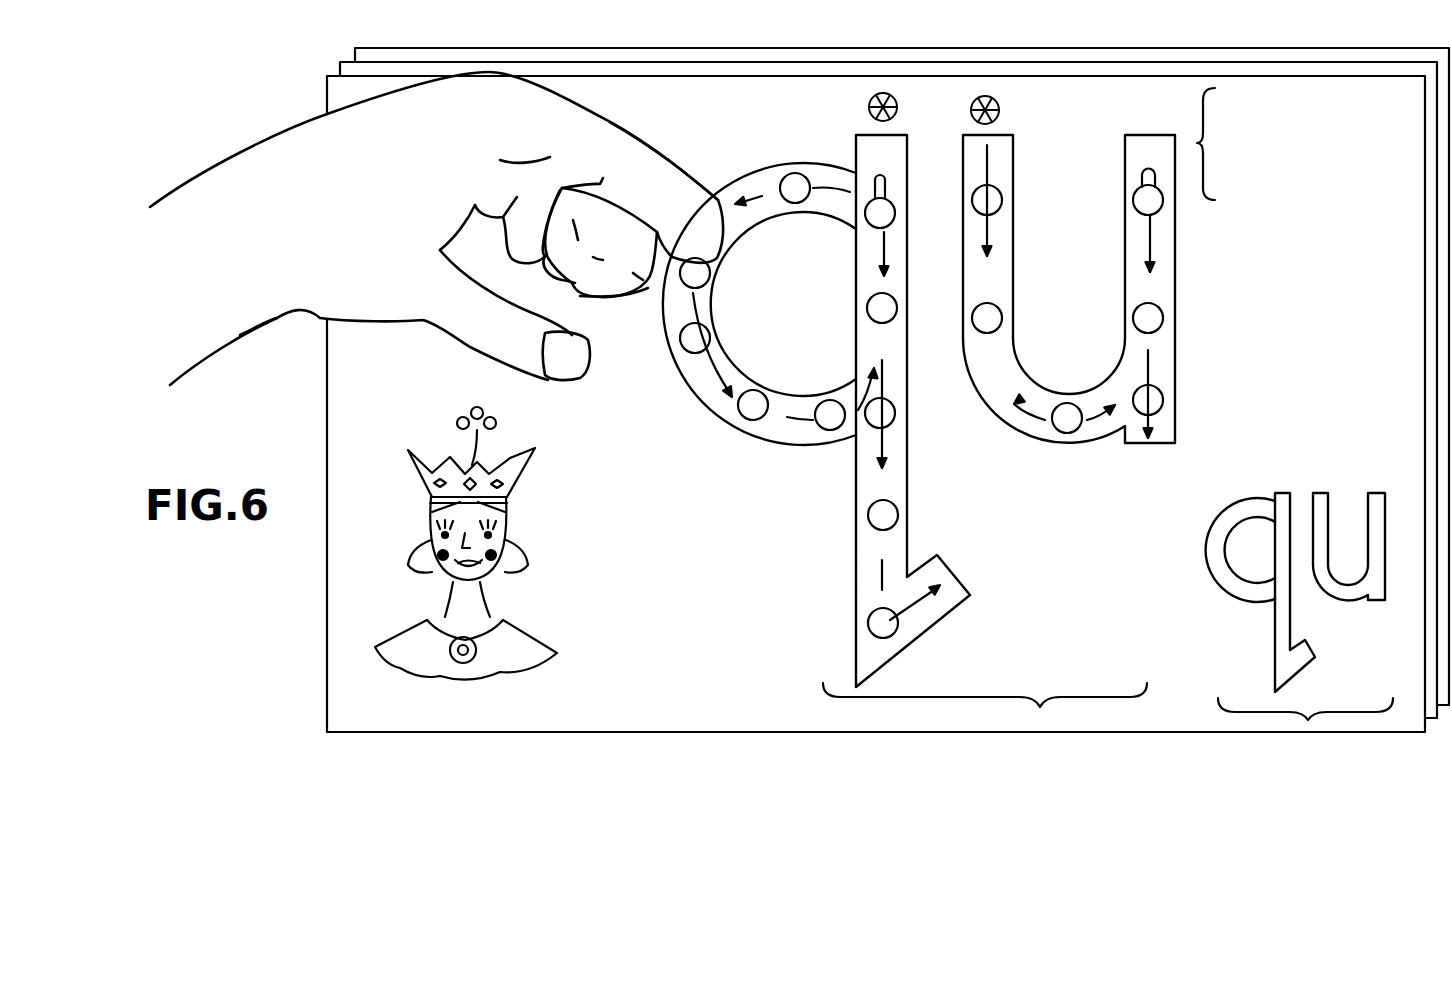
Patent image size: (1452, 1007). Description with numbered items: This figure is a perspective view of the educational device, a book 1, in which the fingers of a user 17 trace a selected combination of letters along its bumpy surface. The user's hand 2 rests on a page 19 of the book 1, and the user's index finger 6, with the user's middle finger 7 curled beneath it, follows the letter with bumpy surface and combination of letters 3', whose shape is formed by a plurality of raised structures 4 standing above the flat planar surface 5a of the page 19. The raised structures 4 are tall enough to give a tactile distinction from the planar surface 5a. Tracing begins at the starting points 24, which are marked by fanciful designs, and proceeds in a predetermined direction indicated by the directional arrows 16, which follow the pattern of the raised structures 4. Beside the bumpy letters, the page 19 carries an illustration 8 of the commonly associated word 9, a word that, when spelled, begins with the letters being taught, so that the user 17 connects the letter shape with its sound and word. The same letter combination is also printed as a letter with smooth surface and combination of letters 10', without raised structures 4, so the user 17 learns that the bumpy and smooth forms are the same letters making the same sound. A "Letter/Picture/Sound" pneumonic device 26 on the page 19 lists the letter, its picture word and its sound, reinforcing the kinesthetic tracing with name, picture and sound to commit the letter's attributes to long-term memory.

The book 1 is at (1268, 43).
The user's hand 2 is at (253, 158).
The letter with bumpy surface and combinations of letters 3' is at (985, 729).
The raised structures 4 is at (797, 172).
The flat planar surface 5a is at (953, 705).
The user's index finger 6 is at (660, 167).
The user's middle finger 7 is at (613, 298).
The illustration of commonly associated word 8 is at (515, 632).
The commonly associated word 9 is at (405, 707).
The letter with smooth surface and combination of letters 10' is at (1299, 634).
The directional arrows 16 is at (762, 192).
The user 17 is at (275, 322).
The page 19 is at (1306, 330).
The starting points 24 is at (983, 97).
The "Letter/Picture/Sound" pneumonic device 26 is at (1200, 142).